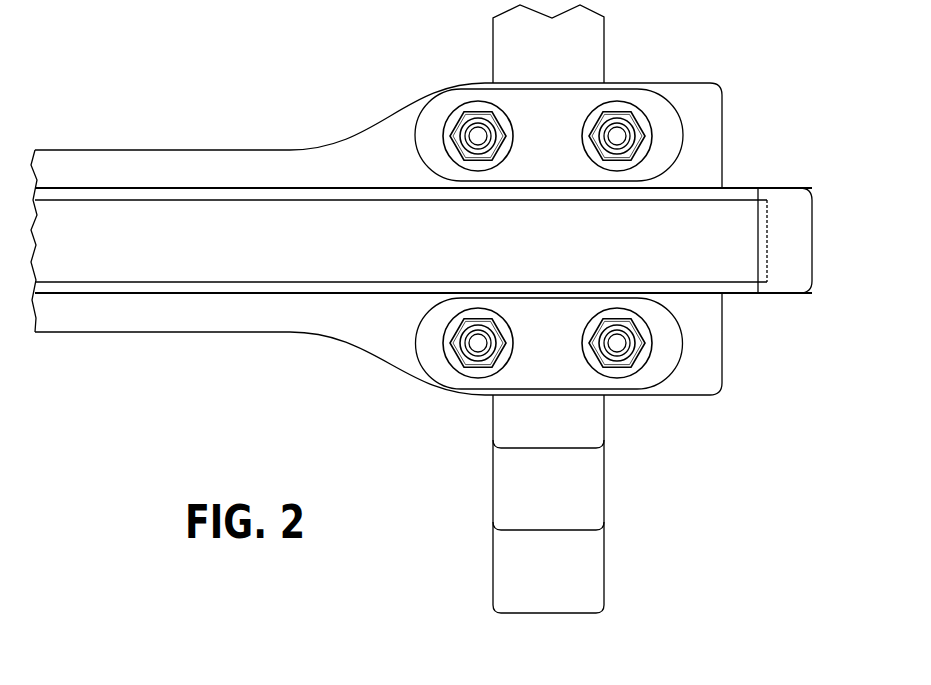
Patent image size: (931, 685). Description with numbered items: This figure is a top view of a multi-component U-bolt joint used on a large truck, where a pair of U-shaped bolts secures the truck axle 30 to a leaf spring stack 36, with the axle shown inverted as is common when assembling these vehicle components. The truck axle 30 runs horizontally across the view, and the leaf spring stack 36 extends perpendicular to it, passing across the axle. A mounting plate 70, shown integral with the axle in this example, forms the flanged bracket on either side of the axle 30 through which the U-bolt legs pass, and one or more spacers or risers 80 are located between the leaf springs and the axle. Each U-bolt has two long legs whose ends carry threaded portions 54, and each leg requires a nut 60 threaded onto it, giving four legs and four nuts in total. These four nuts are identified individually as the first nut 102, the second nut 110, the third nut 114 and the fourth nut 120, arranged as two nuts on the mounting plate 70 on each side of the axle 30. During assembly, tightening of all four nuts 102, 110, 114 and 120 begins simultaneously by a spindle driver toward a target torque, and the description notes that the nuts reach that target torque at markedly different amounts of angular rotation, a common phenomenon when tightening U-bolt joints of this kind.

The truck axle 30 is at (346, 250).
The leaf spring stack 36 is at (559, 507).
The threaded portion 54 is at (633, 135).
The nut 60 is at (462, 125).
The mounting plate 70 is at (387, 337).
The spacer 80 is at (573, 423).
The first nut 102 is at (478, 382).
The second nut 110 is at (653, 326).
The third nut 114 is at (478, 96).
The fourth nut 120 is at (653, 117).